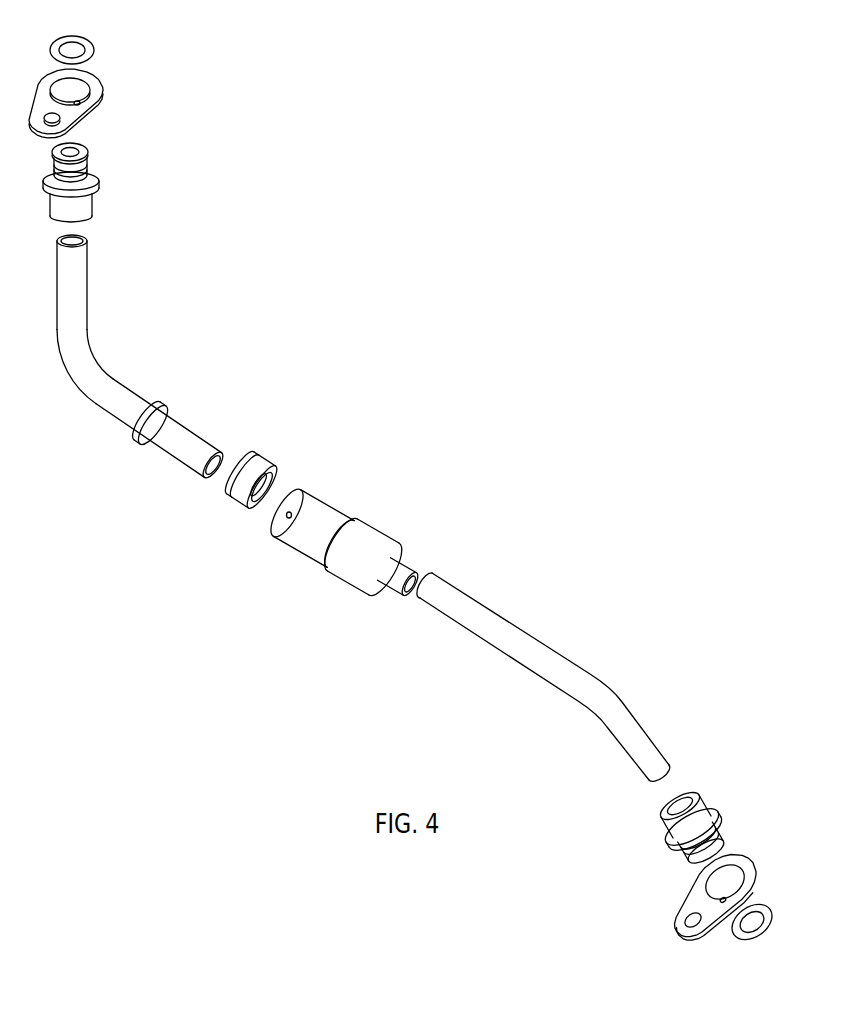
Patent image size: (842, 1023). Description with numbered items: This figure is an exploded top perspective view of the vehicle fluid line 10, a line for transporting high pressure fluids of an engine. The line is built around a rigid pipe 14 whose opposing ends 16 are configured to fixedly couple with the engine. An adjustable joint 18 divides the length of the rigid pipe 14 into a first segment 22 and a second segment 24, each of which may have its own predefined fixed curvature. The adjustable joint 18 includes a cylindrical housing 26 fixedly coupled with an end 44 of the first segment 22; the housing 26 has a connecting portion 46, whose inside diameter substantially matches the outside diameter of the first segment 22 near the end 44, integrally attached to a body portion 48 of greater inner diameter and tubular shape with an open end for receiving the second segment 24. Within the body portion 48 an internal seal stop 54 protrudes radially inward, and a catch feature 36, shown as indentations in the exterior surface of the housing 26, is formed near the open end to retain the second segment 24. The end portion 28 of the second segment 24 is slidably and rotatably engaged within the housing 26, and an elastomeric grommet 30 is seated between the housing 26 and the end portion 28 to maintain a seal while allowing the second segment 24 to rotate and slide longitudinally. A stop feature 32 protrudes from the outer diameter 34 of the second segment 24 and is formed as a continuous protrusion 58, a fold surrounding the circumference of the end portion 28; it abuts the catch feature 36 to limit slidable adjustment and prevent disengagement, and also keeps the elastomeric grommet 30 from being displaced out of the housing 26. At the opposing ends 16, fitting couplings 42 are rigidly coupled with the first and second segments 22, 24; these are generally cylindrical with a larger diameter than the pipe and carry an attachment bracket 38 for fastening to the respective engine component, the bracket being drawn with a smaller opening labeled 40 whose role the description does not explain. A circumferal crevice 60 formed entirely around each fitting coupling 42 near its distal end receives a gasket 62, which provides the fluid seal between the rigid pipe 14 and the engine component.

The vehicle fluid line 10 is at (373, 265).
The rigid pipe 14 is at (70, 383).
The opposing ends 16 is at (135, 155).
The adjustable joint 18 is at (358, 495).
The first segment 22 is at (523, 637).
The second segment 24 is at (73, 338).
The housing 26 is at (390, 532).
The end portion 28 is at (203, 432).
The elastomeric grommet 30 is at (263, 460).
The stop feature 32 is at (168, 416).
The outer diameter 34 is at (132, 395).
The catch feature 36 is at (287, 516).
The attachment bracket 38 is at (97, 85).
The bracket hole 40 is at (53, 118).
The fitting coupling 42 is at (87, 208).
The end of first segment 44 is at (462, 585).
The connecting portion 46 is at (393, 582).
The body portion 48 is at (360, 568).
The internal seal stop 54 is at (334, 548).
The continuous protrusion 58 is at (140, 444).
The circumferal crevice 60 is at (80, 174).
The gasket 62 is at (90, 39).